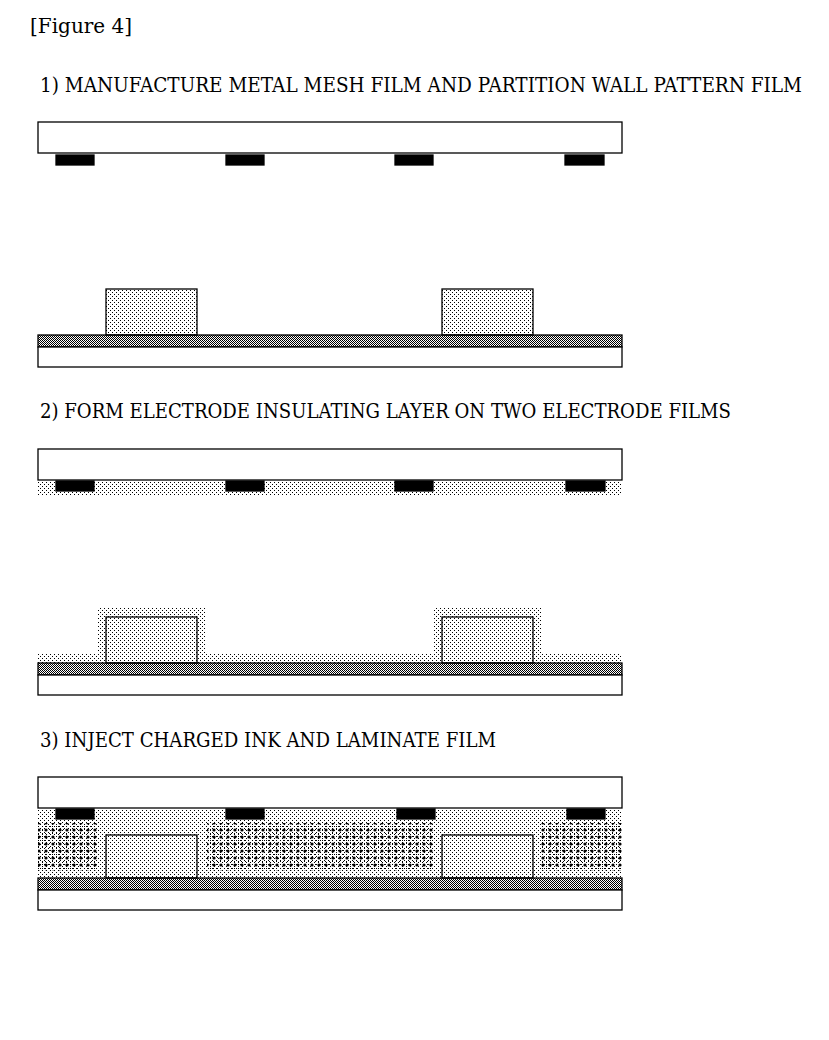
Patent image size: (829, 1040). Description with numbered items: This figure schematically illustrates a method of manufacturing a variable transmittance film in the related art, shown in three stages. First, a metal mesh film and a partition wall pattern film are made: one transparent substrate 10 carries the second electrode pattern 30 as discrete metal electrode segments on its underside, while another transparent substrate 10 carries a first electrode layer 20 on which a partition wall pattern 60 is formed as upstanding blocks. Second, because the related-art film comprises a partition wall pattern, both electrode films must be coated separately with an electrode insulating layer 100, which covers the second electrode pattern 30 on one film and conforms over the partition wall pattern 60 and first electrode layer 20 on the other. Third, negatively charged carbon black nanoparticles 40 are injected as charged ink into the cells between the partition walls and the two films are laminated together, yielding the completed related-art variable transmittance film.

The transparent substrate 10 is at (623, 135).
The first electrode layer 20 is at (623, 339).
The second electrode pattern 30 is at (606, 160).
The negatively charged carbon black nanoparticles 40 is at (373, 857).
The partition wall pattern 60 is at (533, 297).
The electrode insulating layer 100 is at (543, 488).